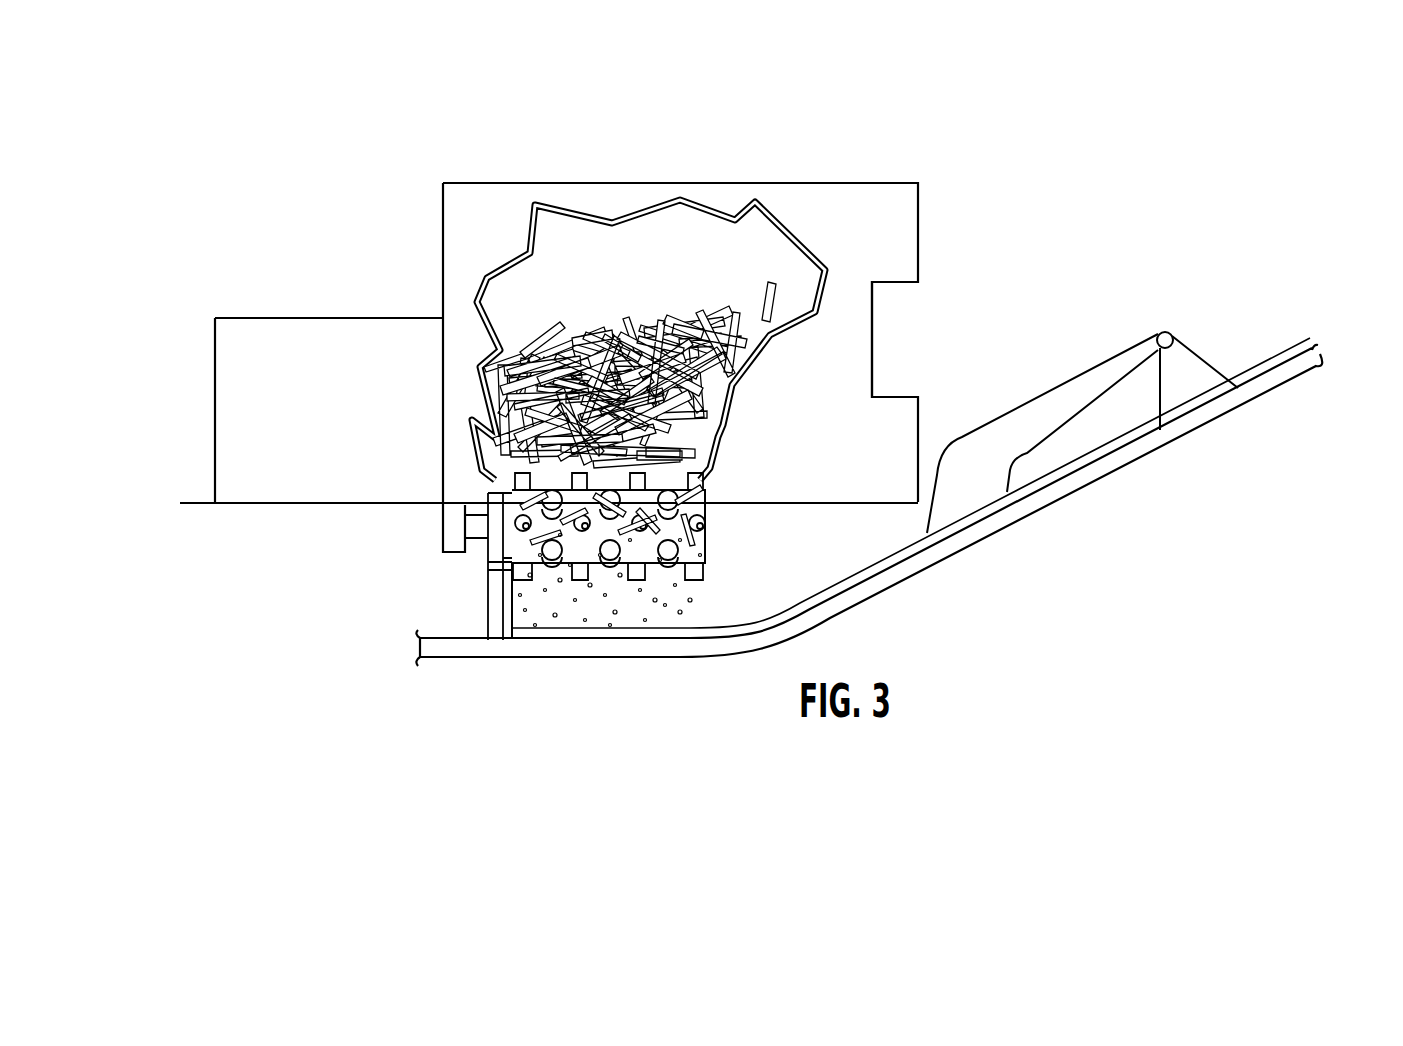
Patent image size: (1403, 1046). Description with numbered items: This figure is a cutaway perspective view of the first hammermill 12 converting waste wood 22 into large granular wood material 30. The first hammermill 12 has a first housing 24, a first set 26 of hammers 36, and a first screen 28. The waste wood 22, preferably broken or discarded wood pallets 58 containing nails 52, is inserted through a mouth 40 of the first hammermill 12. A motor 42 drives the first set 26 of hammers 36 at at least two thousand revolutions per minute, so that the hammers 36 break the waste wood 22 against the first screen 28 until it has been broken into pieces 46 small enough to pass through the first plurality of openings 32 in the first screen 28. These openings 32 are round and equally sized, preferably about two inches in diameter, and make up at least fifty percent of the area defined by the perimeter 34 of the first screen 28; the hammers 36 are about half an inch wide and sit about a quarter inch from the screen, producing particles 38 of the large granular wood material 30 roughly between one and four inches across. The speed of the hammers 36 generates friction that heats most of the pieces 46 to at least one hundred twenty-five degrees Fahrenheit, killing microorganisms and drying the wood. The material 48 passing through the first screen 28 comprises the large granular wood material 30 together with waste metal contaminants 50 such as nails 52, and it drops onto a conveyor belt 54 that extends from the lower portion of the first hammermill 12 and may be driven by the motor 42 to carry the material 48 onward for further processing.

The first hammermill 12 is at (897, 100).
The waste wood 22 is at (705, 250).
The first housing 24 is at (873, 363).
The first set of hammers 26 is at (548, 614).
The first screen 28 is at (661, 568).
The large granular wood material 30 is at (582, 638).
The first plurality of openings 32 is at (665, 508).
The perimeter of the first screen 34 is at (677, 577).
The hammers 36 is at (520, 572).
The particles 38 is at (607, 607).
The mouth 40 is at (875, 255).
The motor 42 is at (317, 318).
The pieces 46 is at (540, 607).
The material 48 is at (520, 624).
The waste metal contaminants 50 is at (670, 620).
The nails 52 is at (550, 325).
The conveyor belt 54 is at (1245, 378).
The wood pallets 58 is at (618, 318).